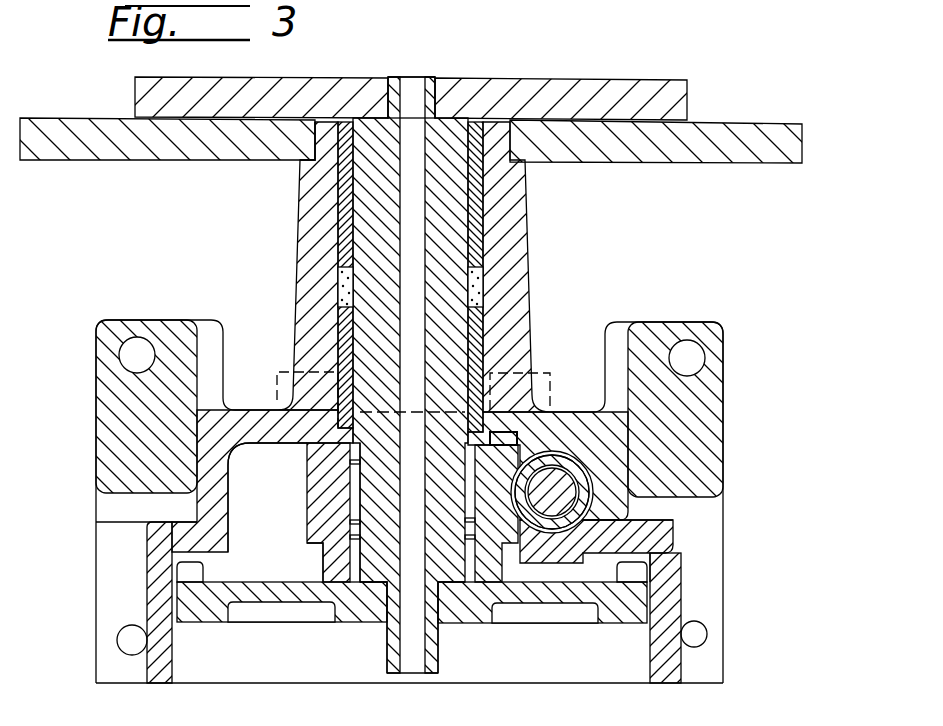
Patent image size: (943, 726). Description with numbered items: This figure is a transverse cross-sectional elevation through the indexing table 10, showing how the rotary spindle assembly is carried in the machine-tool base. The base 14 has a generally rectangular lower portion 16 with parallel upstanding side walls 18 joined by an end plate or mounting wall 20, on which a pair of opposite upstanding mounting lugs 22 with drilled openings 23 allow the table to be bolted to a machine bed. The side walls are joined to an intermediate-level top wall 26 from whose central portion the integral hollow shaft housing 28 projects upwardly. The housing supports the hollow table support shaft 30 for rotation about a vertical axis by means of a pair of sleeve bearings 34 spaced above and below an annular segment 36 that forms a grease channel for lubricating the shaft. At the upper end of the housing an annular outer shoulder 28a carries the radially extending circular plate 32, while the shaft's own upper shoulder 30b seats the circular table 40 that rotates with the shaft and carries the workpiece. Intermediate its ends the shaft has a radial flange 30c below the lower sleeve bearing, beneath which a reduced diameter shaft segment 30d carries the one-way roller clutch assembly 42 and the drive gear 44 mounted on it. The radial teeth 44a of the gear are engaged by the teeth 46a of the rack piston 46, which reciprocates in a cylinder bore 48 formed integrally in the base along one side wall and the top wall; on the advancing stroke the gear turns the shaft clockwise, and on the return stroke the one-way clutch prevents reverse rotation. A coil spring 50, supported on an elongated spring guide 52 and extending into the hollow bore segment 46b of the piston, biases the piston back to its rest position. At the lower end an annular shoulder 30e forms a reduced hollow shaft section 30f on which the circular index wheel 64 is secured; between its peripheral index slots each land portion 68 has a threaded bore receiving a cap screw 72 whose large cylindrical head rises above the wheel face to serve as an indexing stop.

The indexing table 10 is at (398, 717).
The base 14 is at (90, 575).
The lower portion 16 is at (634, 425).
The side walls 18 is at (178, 655).
The end plate or mounting wall 20 is at (287, 669).
The mounting lugs 22 is at (110, 385).
The drilled openings 23 is at (125, 348).
The top wall 26 is at (262, 446).
The shaft housing 28 is at (522, 202).
The annular outer shoulder or recess 28a is at (298, 162).
The table support shaft 30 is at (335, 207).
The annular recess or shoulder 30b is at (440, 95).
The radial flange 30c is at (300, 398).
The reduced diameter shaft segment 30d is at (335, 500).
The annular shoulder 30e is at (447, 590).
The hollow shaft section 30f is at (387, 635).
The circular plate 32 is at (715, 150).
The sleeve bearings 34 is at (345, 232).
The annular segment 36 is at (478, 285).
The circular table 40 is at (687, 97).
The one-way roller clutch assembly 42 is at (476, 512).
The drive gear 44 is at (322, 468).
The radial teeth 44a is at (310, 540).
The rack piston 46 is at (588, 472).
The teeth 46a is at (498, 436).
The hollow bore segment 46b is at (552, 452).
The cylinder bore 48 is at (627, 517).
The coil spring 50 is at (572, 538).
The spring guide 52 is at (528, 492).
The index wheel 64 is at (207, 620).
The land portion 68 is at (180, 598).
The cap screw 72 is at (180, 570).